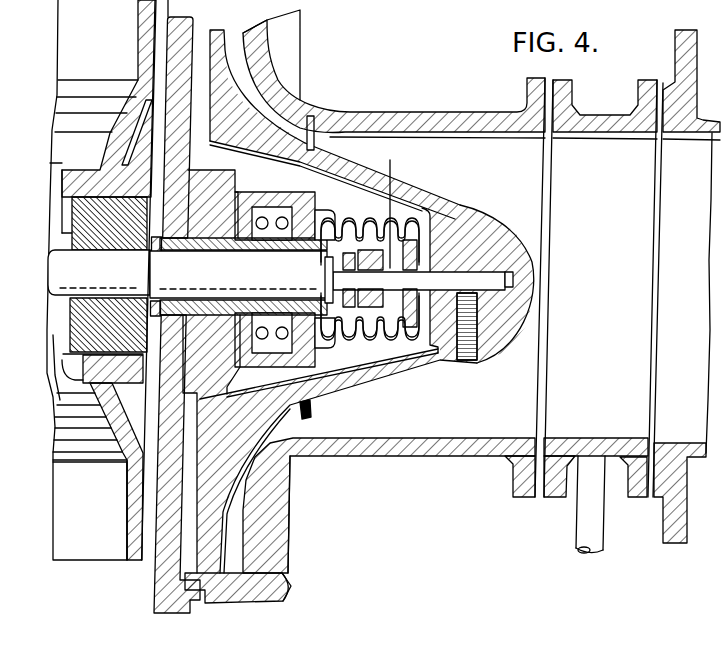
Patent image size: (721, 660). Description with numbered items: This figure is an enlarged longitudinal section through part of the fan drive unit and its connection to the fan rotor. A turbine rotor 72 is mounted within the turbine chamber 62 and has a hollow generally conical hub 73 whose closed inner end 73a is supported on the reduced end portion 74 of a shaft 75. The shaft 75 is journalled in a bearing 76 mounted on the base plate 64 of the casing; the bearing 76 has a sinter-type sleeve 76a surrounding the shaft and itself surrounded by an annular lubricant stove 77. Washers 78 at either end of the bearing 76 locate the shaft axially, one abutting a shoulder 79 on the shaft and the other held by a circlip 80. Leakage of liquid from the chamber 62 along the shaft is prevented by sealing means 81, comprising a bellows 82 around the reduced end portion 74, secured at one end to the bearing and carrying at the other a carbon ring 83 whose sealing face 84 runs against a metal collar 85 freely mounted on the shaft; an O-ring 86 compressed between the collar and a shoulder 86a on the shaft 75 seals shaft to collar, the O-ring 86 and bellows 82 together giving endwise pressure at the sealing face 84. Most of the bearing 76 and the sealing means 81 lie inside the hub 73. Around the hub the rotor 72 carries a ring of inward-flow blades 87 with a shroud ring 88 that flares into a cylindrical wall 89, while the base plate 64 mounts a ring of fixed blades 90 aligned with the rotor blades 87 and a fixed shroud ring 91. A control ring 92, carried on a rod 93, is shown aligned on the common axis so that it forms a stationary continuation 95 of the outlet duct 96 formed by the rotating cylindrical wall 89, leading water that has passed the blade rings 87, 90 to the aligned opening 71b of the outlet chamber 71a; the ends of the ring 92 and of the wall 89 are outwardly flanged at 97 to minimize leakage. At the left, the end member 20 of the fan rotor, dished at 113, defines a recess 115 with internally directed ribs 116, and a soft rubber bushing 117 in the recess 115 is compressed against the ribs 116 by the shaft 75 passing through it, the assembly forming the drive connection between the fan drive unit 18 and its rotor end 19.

The electric motor 18 is at (93, 562).
The motor housing block 19 is at (83, 527).
The end member 20 is at (132, 557).
The turbine chamber 62 is at (410, 103).
The base plate 64 is at (152, 605).
The outlet chamber 71a is at (703, 241).
The opening 71b is at (677, 448).
The turbine rotor 72 is at (307, 100).
The hollow generally conical hub 73 is at (377, 382).
The closed inner end 73a is at (457, 210).
The reduced end portion 74 is at (361, 270).
The shaft 75 is at (229, 284).
The bearing 76 is at (235, 345).
The sleeve 76a is at (243, 199).
The annular lubricant stove 77 is at (305, 211).
The washers 78 is at (292, 255).
The shoulder 79 is at (152, 270).
The circlip 80 is at (402, 280).
The sealing means 81 is at (420, 350).
The bellows 82 is at (352, 335).
The carbon ring 83 is at (480, 217).
The sealing face 84 is at (465, 202).
The metal collar 85 is at (312, 408).
The O-ring 86 is at (337, 218).
The shoulder 86a is at (328, 347).
The ring of blades 87 is at (287, 439).
The shroud ring 88 is at (238, 513).
The cylindrical wall 89 is at (414, 456).
The ring of fixed blades 90 is at (221, 590).
The fixed shroud ring 91 is at (279, 588).
The control ring 92 is at (547, 500).
The rod 93 is at (577, 503).
The stationary continuation 95 is at (604, 357).
The outlet duct 96 is at (525, 384).
The outwardly flanged ends 97 is at (540, 497).
The dished portion 113 is at (128, 486).
The recess 115 is at (75, 387).
The internally directed ribs 116 is at (103, 190).
The soft rubber bushing 117 is at (99, 274).